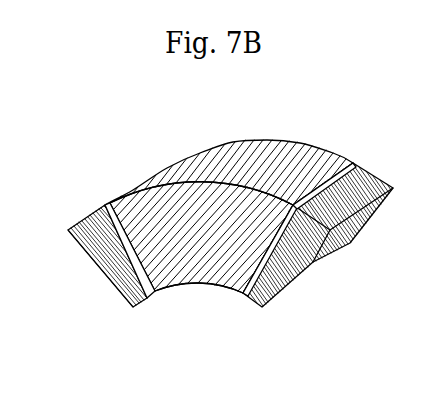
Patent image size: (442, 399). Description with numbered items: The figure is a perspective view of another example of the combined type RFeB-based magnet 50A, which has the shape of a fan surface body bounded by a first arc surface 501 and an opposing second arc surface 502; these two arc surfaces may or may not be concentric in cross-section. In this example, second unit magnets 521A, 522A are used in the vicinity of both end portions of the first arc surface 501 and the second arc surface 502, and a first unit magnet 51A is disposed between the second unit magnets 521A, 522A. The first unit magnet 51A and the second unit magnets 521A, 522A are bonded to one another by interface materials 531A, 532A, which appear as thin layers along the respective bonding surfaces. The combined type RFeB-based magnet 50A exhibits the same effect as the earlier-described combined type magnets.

The combined type RFeB-based magnet 50A is at (214, 236).
The first unit magnet 51A is at (168, 279).
The first arc surface 501 is at (240, 160).
The second arc surface 502 is at (203, 288).
The second unit magnet 521A is at (78, 245).
The second unit magnet 522A is at (348, 247).
The interface material 531A is at (107, 204).
The interface material 532A is at (352, 163).